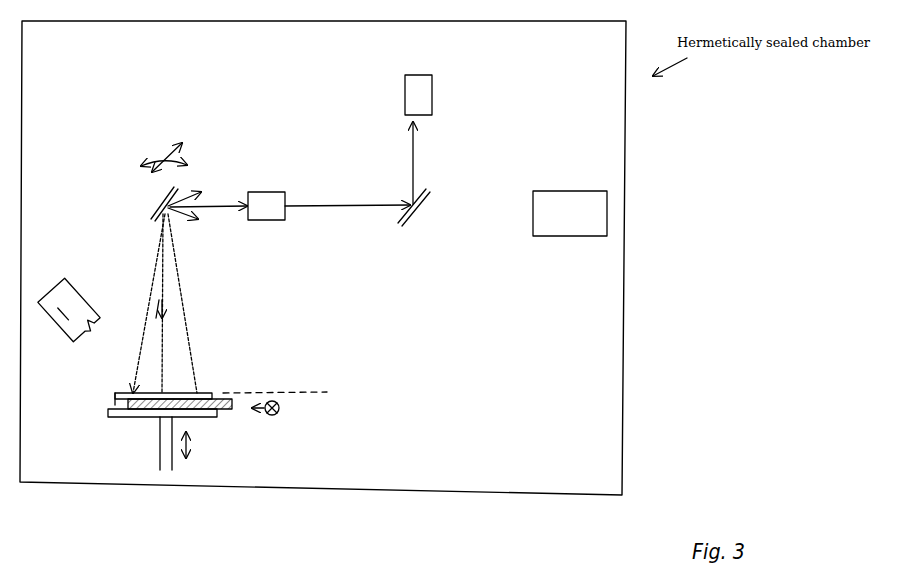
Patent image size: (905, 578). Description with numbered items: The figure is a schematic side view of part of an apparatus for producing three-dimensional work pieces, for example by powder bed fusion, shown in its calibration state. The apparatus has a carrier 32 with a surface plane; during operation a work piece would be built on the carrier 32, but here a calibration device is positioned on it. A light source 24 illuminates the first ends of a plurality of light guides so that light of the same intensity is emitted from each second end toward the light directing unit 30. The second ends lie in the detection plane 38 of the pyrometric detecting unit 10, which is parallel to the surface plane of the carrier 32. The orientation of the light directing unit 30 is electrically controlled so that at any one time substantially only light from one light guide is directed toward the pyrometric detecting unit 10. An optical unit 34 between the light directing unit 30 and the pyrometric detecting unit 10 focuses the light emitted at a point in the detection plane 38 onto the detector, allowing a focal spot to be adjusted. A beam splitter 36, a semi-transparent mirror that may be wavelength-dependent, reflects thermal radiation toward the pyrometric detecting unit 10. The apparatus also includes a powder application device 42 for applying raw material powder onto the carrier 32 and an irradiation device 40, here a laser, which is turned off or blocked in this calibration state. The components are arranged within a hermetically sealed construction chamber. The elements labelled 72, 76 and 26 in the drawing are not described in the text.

The pyrometric detecting unit 10 is at (425, 101).
The light source 24 is at (271, 415).
The sample 26 is at (113, 397).
The light directing unit 30 is at (156, 206).
The carrier 32 is at (108, 416).
The optical unit 34 is at (277, 213).
The beam splitter 36 is at (413, 228).
The detection plane 38 is at (327, 392).
The irradiation device 40 is at (578, 224).
The powder application device 42 is at (70, 311).
The sample holder 72 is at (212, 382).
The heater 76 is at (226, 418).